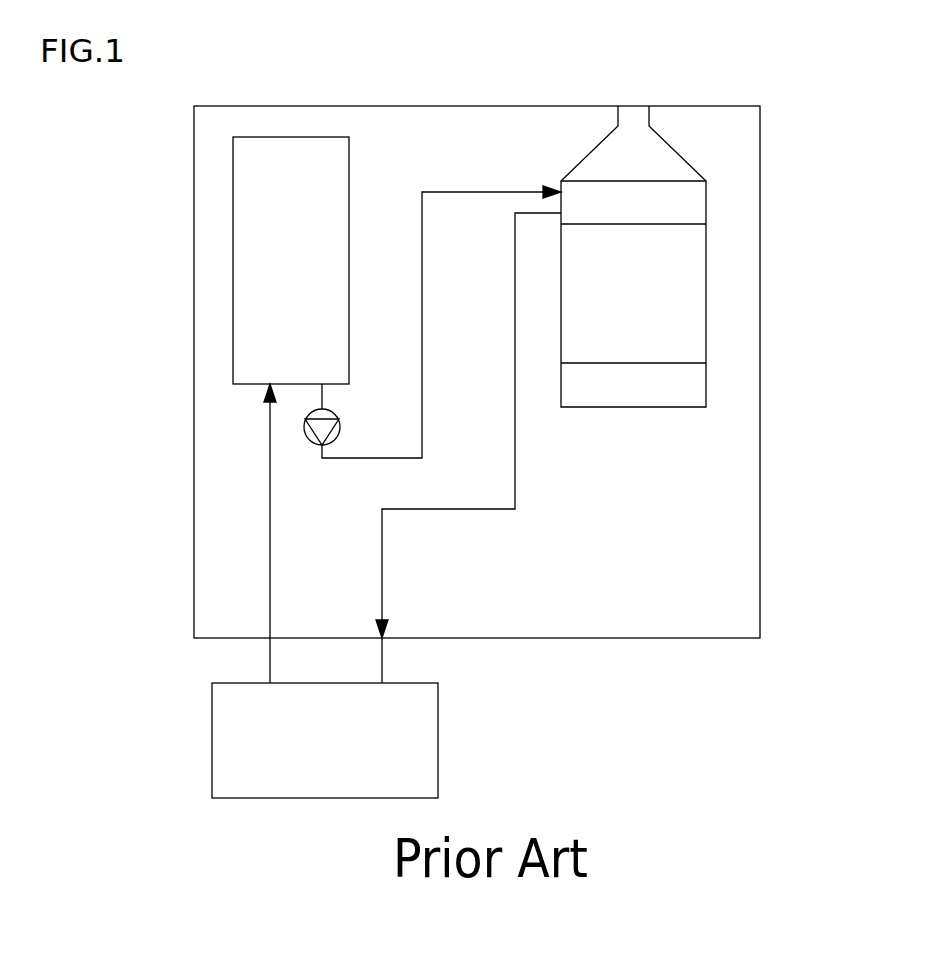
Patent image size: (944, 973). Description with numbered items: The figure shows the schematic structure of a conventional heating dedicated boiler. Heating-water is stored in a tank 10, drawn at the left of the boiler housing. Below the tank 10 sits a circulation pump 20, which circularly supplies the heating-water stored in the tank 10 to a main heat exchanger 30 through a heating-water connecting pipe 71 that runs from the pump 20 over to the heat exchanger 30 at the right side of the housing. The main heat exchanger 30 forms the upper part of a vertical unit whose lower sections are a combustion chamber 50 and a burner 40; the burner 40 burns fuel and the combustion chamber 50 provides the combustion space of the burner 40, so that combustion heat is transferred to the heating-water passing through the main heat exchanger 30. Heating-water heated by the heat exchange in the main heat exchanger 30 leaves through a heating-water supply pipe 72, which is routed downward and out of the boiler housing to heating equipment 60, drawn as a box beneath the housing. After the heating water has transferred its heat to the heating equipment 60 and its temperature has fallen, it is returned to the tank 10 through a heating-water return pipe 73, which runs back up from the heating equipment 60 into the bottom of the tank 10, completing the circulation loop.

The tank 10 is at (245, 221).
The circulation pump 20 is at (340, 411).
The main heat exchanger 30 is at (697, 203).
The burner 40 is at (692, 381).
The combustion chamber 50 is at (697, 294).
The heating equipment 60 is at (438, 739).
The heating-water connecting pipe 71 is at (422, 237).
The heating-water supply pipe 72 is at (382, 577).
The heating-water return pipe 73 is at (270, 547).